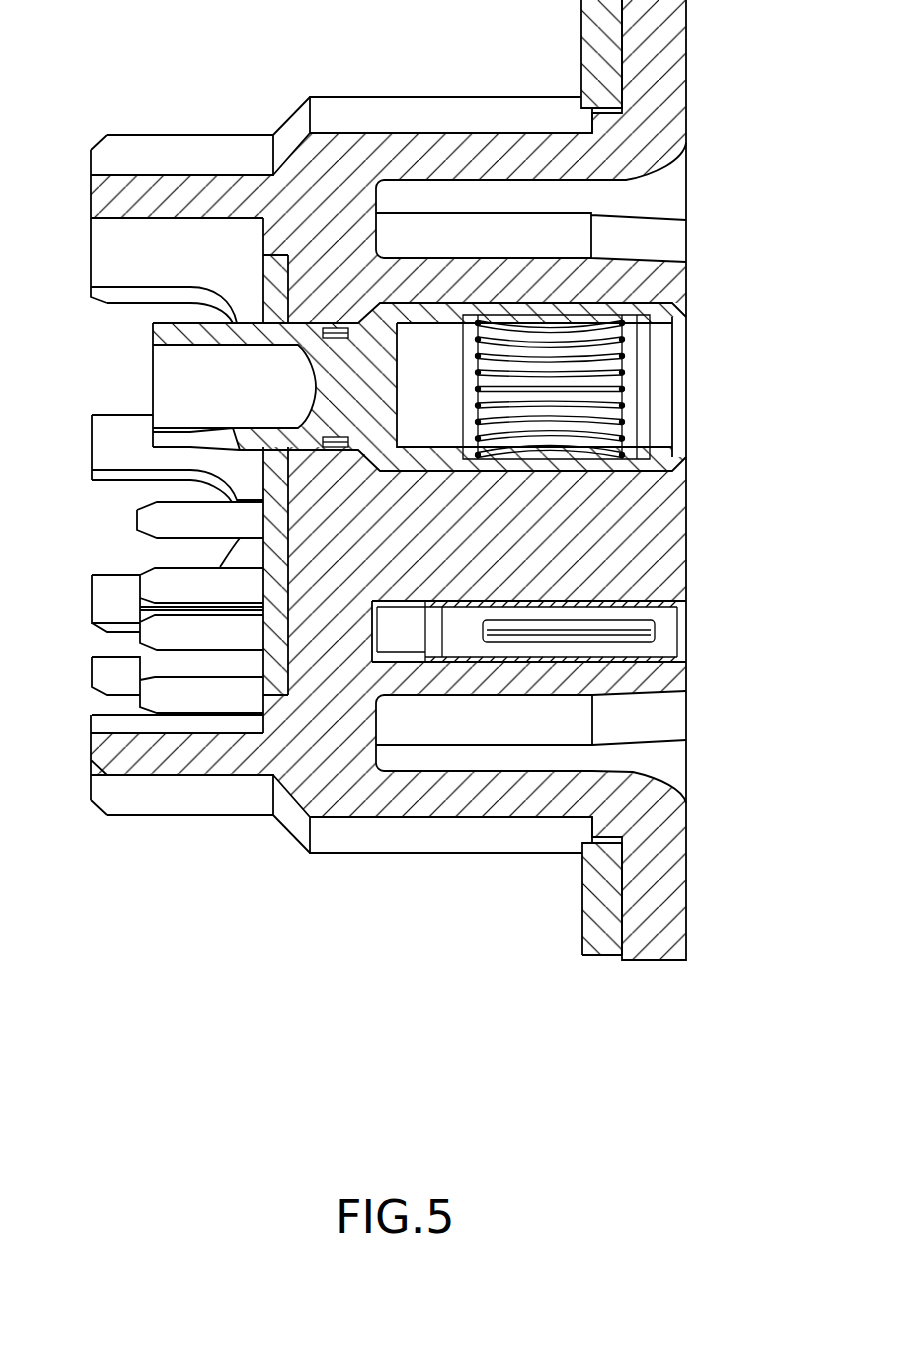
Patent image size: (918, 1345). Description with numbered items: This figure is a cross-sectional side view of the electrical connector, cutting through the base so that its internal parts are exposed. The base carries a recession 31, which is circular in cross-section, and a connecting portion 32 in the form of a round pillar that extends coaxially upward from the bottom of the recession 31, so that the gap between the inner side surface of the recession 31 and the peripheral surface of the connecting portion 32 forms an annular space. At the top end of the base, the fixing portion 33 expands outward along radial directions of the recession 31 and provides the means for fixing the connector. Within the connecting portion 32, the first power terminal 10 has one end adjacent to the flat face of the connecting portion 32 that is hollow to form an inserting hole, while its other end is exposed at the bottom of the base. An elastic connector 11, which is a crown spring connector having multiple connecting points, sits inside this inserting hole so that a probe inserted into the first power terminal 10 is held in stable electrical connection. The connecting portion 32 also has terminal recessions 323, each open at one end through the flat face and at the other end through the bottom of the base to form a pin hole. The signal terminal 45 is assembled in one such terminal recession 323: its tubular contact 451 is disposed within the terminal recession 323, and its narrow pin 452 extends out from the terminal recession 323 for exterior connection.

The first power terminal 10 is at (675, 402).
The elastic connector 11 is at (627, 390).
The recession 31 is at (672, 200).
The connecting portion 32 is at (687, 547).
The fixing portion 33 is at (680, 50).
The terminal recession 323 is at (623, 667).
The signal terminal 45 is at (413, 640).
The contact 451 is at (582, 630).
The narrow pin 452 is at (215, 637).